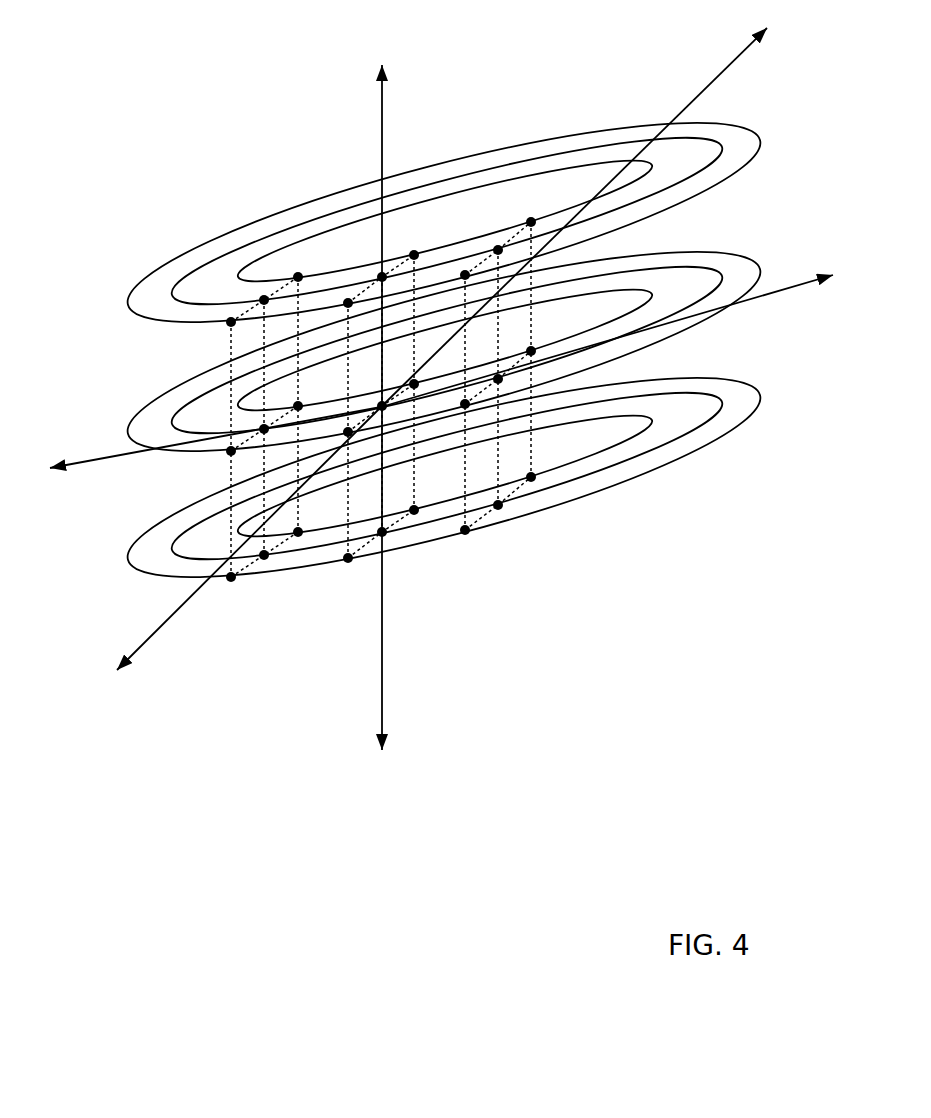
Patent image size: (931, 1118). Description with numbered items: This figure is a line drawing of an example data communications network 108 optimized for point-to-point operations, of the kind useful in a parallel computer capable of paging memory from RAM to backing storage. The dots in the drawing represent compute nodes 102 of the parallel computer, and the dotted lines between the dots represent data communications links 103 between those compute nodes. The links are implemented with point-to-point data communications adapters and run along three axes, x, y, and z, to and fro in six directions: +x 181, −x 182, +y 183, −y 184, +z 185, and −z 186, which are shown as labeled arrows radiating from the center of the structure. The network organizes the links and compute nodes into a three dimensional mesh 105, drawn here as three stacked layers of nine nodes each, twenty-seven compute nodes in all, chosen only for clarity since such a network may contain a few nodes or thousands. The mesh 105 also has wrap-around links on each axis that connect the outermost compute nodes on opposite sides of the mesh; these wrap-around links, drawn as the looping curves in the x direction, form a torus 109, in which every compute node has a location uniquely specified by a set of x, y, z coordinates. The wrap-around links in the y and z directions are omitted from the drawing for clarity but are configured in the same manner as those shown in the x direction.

The compute nodes 102 is at (465, 535).
The data communications links 103 is at (230, 478).
The three dimensional mesh 105 is at (295, 277).
The data communications network 108 is at (431, 531).
The torus 109 is at (220, 232).
The +x direction 181 is at (869, 307).
The −x direction 182 is at (49, 507).
The +y direction 183 is at (809, 52).
The −y direction 184 is at (111, 720).
The +z direction 185 is at (397, 52).
The −z direction 186 is at (399, 812).